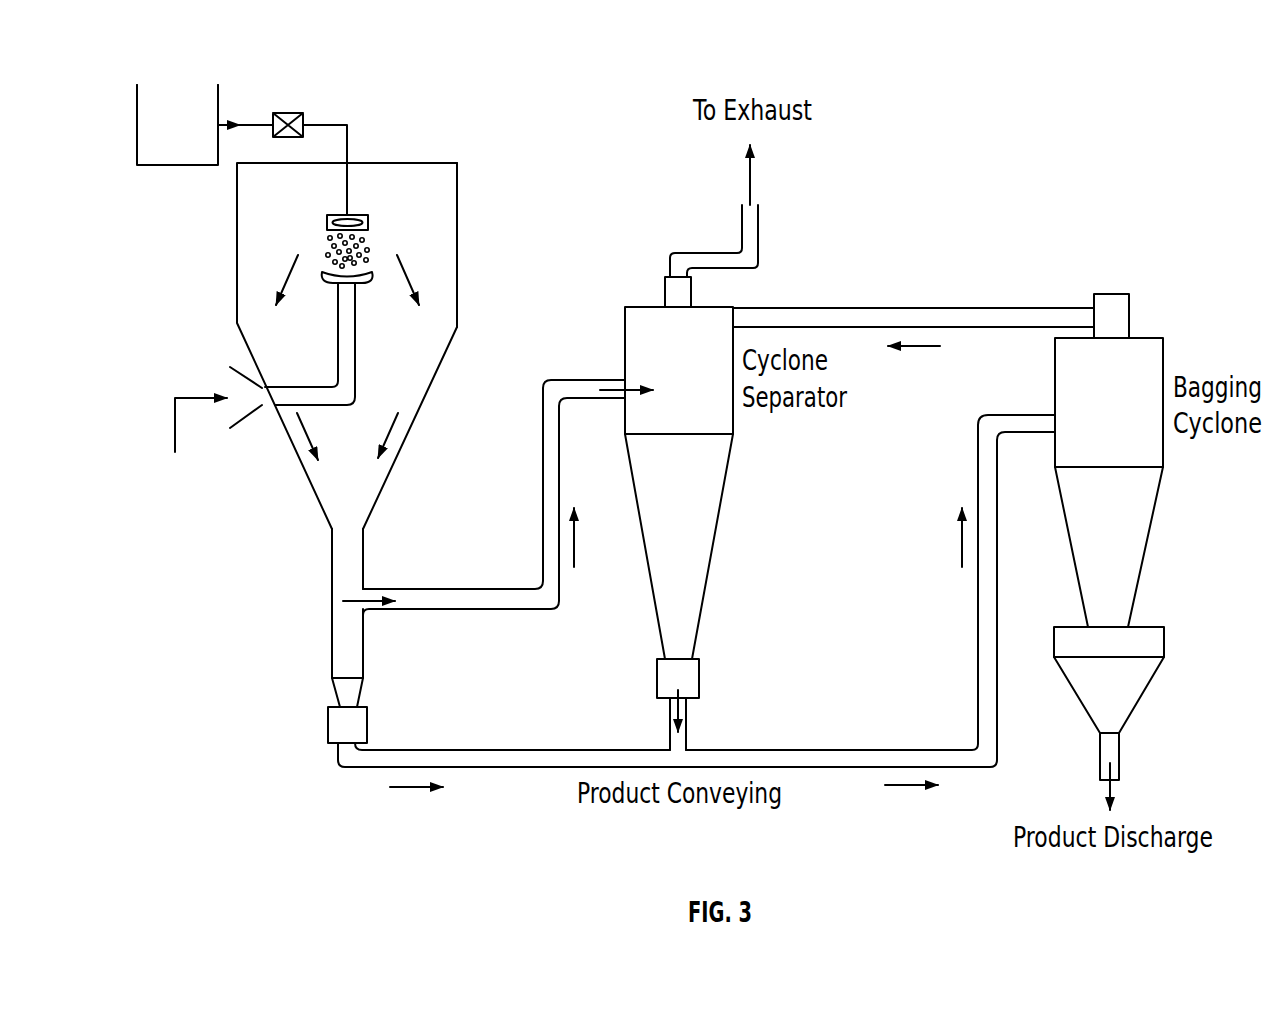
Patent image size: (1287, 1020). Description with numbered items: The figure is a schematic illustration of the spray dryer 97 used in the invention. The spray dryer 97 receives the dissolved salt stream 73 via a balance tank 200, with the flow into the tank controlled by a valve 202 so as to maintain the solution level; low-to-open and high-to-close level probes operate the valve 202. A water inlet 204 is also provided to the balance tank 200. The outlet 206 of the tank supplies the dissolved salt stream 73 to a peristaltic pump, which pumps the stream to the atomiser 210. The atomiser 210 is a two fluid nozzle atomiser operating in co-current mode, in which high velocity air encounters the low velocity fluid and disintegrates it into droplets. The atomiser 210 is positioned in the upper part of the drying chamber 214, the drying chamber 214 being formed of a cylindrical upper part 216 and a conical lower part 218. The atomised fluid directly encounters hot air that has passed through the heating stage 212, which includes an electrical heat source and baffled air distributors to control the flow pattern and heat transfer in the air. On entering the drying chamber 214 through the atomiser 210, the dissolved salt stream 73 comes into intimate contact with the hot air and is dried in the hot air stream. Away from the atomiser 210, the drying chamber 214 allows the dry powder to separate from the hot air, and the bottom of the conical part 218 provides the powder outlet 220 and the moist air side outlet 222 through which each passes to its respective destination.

The spray dryer 97 is at (325, 43).
The dissolved salt stream 73 is at (142, 155).
The water inlet 204 is at (148, 95).
The balance tank 200 is at (219, 105).
The outlet 206 is at (220, 122).
The valve 202 is at (303, 117).
The atomiser 210 is at (368, 222).
The cylindrical upper part 216 is at (237, 245).
The drying chamber 214 is at (447, 285).
The conical lower part 218 is at (397, 455).
The heating stage 212 is at (158, 503).
The powder outlet 220 is at (323, 652).
The moist air side outlet 222 is at (445, 555).